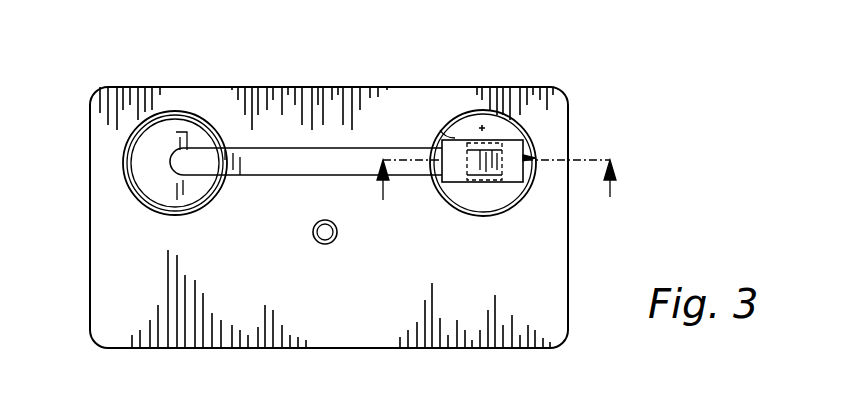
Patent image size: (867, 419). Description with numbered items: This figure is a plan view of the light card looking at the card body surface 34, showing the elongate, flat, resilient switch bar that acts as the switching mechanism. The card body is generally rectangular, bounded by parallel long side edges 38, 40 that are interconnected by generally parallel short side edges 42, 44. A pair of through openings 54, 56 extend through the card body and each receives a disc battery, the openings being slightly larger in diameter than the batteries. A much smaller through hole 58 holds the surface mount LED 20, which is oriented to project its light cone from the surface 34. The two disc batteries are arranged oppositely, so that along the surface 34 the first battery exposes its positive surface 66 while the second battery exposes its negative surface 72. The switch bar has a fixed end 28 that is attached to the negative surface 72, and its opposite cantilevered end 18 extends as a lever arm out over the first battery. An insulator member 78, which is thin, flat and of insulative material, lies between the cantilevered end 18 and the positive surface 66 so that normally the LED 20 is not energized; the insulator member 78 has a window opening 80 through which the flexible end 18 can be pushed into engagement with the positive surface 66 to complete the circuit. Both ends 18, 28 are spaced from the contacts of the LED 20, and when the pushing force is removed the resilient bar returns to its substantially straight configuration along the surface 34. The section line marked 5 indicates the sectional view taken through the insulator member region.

The cantilevered end 18 is at (535, 158).
The surface mount LED 20 is at (330, 243).
The fixed end 28 is at (190, 158).
The card body surface 34 is at (511, 264).
The long side edge 38 is at (393, 87).
The long side edge 40 is at (262, 348).
The short side edge 42 is at (568, 253).
The short side edge 44 is at (90, 273).
The through opening 54 is at (493, 115).
The through opening 56 is at (172, 113).
The through hole 58 is at (323, 244).
The positive surface 66 is at (525, 139).
The negative surface 72 is at (155, 176).
The insulator member 78 is at (455, 138).
The window opening 80 is at (497, 140).
The section line 5- 5 is at (496, 193).